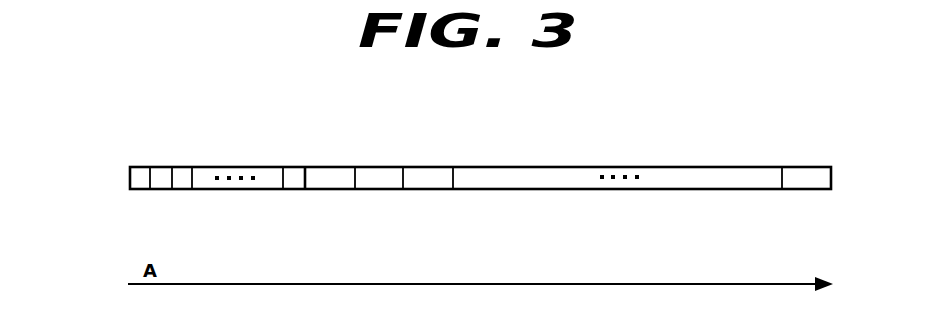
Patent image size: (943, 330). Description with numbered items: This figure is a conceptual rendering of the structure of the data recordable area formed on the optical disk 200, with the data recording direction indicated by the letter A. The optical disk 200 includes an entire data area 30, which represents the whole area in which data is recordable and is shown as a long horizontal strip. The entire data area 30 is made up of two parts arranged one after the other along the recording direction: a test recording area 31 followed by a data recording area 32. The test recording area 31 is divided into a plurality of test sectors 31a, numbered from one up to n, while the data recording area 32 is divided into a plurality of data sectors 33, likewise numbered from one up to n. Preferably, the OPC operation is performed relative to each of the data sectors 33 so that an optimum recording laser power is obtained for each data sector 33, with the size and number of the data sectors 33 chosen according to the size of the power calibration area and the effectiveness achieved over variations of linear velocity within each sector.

The optical disk 200 is at (446, 162).
The entire data area 30 is at (827, 158).
The test recording area 31 is at (305, 163).
The test sector 31a is at (183, 192).
The data recording area 32 is at (827, 128).
The data sector 33 is at (347, 191).